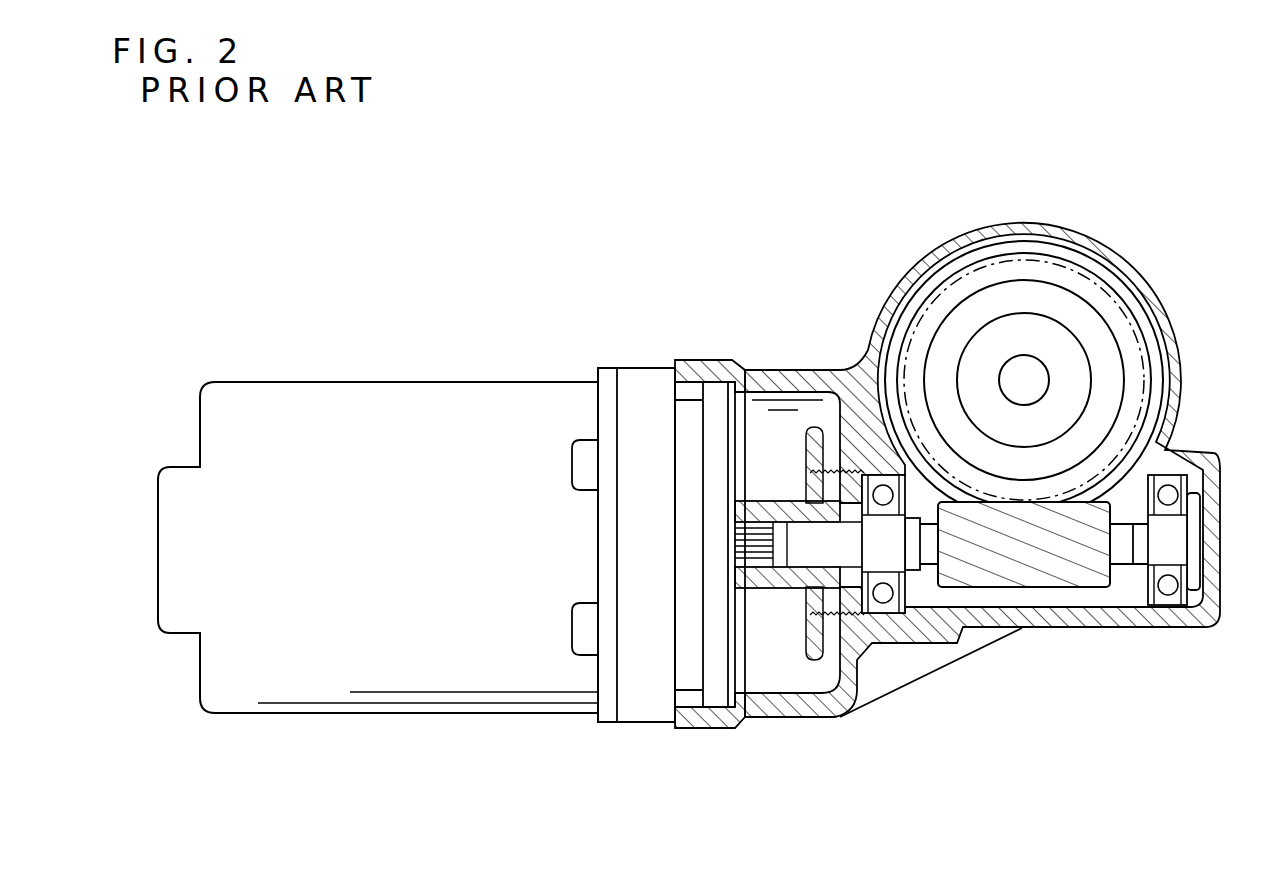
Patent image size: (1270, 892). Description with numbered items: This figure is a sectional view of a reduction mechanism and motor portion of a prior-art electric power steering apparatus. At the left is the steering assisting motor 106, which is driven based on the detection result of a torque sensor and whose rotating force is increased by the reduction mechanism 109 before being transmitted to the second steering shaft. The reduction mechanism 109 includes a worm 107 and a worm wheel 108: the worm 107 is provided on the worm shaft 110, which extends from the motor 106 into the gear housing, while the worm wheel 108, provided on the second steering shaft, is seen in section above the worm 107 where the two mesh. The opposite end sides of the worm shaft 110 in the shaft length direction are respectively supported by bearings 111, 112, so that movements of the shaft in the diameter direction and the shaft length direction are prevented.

The steering assisting motor 106 is at (436, 378).
The worm 107 is at (1027, 589).
The worm wheel 108 is at (1158, 328).
The reduction mechanism 109 is at (1122, 586).
The worm shaft 110 is at (977, 588).
The bearing 111 is at (1175, 606).
The bearing 112 is at (878, 648).